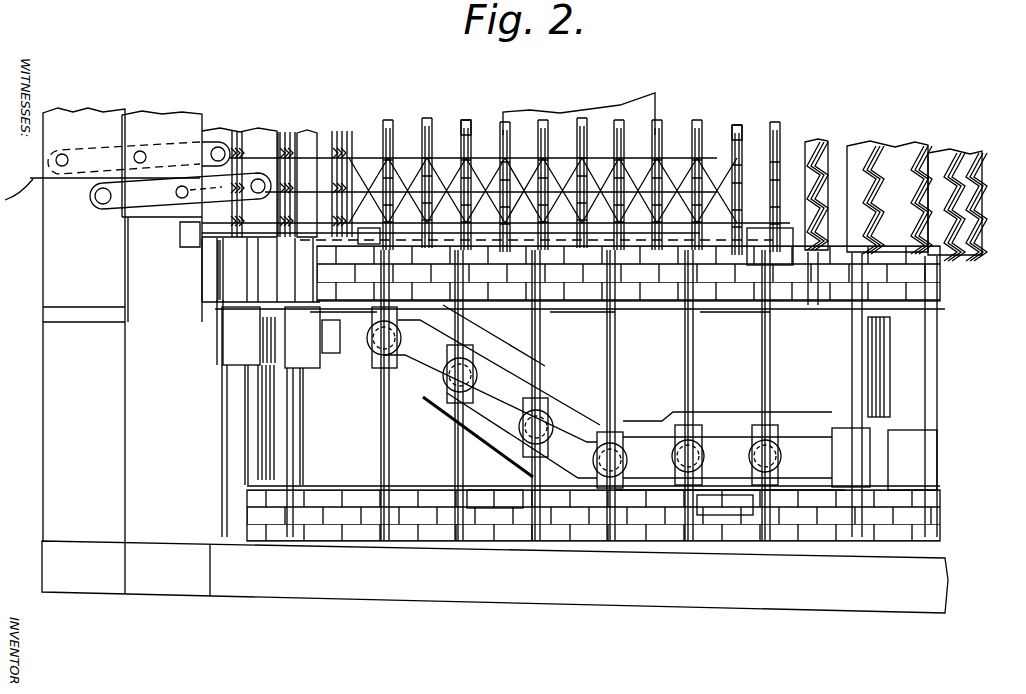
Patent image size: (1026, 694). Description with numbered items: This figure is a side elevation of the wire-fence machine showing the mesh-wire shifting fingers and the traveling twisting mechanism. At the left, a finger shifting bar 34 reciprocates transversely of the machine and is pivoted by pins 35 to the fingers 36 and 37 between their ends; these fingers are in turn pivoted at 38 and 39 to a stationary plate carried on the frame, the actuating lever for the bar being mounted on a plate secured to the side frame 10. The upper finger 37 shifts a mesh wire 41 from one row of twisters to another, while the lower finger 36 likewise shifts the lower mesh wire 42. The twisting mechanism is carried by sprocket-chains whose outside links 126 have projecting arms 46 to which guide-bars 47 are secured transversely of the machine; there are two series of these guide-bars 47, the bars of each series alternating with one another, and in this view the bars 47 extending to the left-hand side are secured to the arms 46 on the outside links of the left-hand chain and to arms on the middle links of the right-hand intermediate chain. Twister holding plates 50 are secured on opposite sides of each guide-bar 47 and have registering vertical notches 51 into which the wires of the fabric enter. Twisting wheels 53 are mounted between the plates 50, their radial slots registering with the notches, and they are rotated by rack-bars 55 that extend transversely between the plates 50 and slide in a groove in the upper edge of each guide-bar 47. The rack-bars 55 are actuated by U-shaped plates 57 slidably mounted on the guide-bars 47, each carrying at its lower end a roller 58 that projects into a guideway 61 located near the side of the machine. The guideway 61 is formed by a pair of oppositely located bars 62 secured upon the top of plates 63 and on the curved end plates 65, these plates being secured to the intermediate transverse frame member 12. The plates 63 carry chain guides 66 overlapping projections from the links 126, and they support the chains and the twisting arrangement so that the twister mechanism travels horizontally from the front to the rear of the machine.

The side frame 10 is at (43, 243).
The intermediate transverse frame member 12 is at (656, 109).
The finger shifting bar 34 is at (188, 115).
The pins 35 is at (140, 150).
The lower finger 36 is at (152, 136).
The finger 37 is at (152, 211).
The pivot 38 is at (63, 153).
The pivot 39 is at (102, 206).
The mesh wire 41 is at (372, 190).
The lower mesh wire 42 is at (258, 130).
The projecting arms 46 is at (374, 538).
The guide-bars 47 is at (306, 431).
The twister holding plates 50 is at (185, 250).
The vertical notches 51 is at (985, 172).
The twisting wheels 53 is at (468, 128).
The rack-bars 55 is at (203, 293).
The U-shaped plates 57 is at (372, 369).
The roller 58 is at (370, 338).
The guideway 61 is at (521, 391).
The oppositely located bars 62 is at (733, 418).
The plates 63 is at (582, 329).
The curved end plates 65 is at (540, 388).
The chain guides 66 is at (788, 215).
The outside links 126 is at (430, 559).